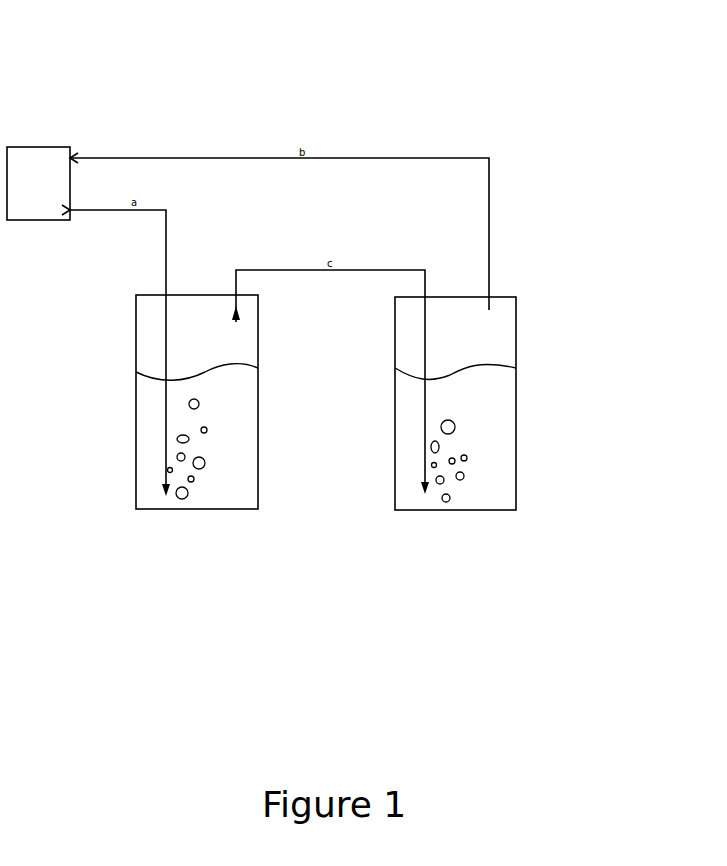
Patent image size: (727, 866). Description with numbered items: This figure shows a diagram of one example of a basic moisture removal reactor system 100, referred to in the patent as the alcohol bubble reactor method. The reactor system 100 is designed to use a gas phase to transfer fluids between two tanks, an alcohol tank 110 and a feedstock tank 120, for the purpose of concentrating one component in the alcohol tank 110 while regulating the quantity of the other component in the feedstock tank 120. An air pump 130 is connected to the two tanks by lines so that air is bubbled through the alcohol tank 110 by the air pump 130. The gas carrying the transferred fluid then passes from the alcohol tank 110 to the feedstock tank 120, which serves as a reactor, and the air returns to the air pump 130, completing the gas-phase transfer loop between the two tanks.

The reactor system 100 is at (553, 187).
The alcohol tank 110 is at (147, 365).
The feedstock tank 120 is at (518, 348).
The air pump 130 is at (22, 143).